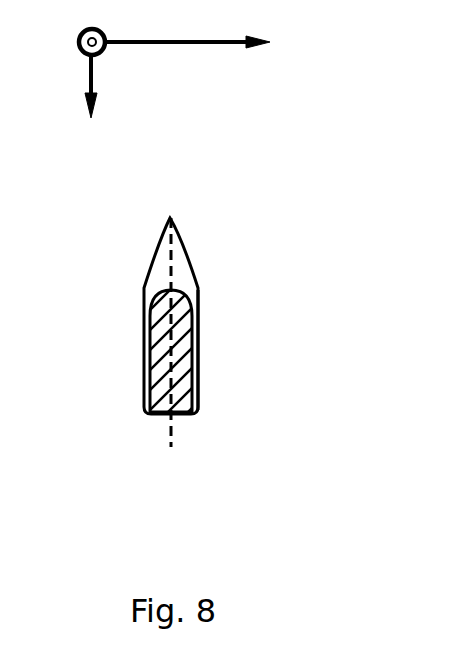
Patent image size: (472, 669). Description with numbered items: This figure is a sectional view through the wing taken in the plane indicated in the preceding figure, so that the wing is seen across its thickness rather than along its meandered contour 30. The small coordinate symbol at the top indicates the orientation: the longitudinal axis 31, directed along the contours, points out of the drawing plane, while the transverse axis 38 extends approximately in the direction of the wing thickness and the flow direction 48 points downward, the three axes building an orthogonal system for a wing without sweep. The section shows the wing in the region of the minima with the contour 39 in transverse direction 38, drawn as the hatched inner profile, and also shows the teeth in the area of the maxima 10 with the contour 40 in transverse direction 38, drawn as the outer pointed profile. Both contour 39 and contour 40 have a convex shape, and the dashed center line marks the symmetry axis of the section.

The maxima of contour 10 is at (200, 290).
The meandered contour 30 is at (226, 306).
The longitudinal axis 31 is at (66, 40).
The transverse axis 38 is at (187, 25).
The contour in the region of minima 39 is at (249, 271).
The contour in the area of maxima 40 is at (151, 273).
The flow direction 48 is at (71, 86).